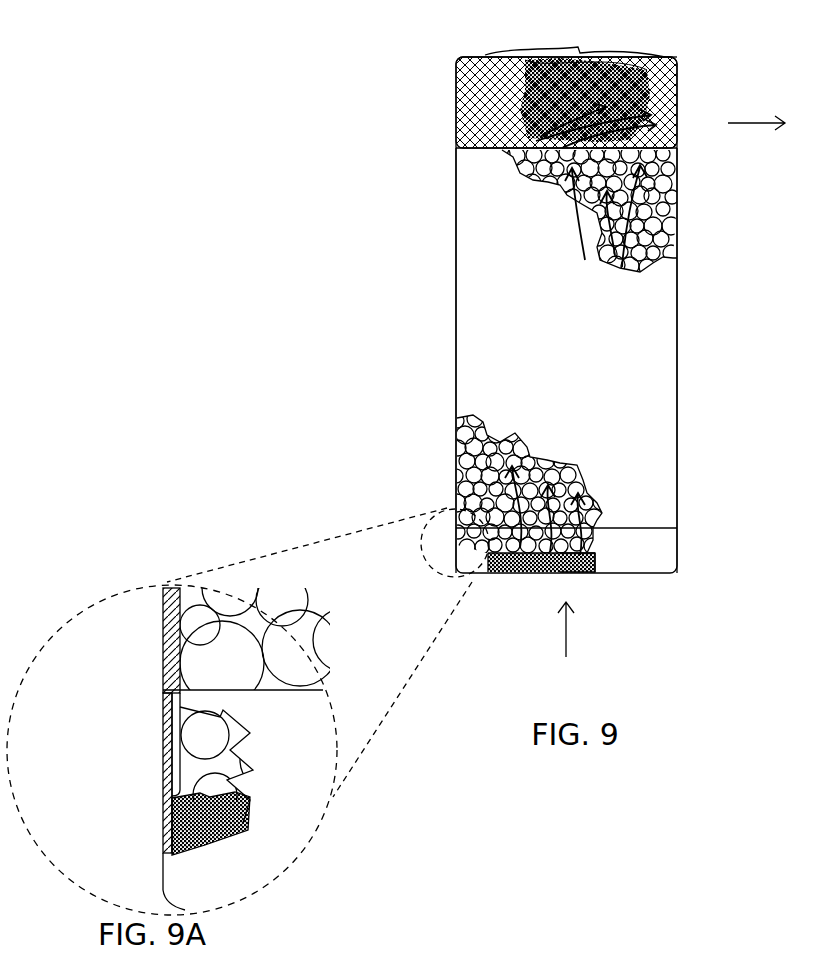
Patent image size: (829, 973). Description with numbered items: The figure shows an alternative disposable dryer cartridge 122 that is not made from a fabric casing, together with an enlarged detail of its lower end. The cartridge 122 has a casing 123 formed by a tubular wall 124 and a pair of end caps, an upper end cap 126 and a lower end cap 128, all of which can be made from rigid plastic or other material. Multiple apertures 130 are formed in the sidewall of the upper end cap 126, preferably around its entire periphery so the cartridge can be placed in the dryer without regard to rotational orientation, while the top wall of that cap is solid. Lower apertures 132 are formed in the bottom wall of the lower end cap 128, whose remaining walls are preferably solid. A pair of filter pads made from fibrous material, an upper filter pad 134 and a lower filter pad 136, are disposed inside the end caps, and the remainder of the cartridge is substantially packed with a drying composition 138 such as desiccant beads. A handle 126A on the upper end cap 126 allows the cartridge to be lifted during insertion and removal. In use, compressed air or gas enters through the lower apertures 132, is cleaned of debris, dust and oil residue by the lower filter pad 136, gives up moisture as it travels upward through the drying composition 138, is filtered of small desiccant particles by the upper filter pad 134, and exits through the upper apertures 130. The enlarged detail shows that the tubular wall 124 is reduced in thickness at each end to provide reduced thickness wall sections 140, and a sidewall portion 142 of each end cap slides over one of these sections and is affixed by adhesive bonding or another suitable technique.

In FIG. 9, the cartridge 122 is at (415, 306).
In FIG. 9, the casing 123 is at (678, 323).
In FIG. 9, the tubular wall 124 is at (456, 437).
In FIG. 9, the upper end cap 126 is at (679, 91).
In FIG. 9, the handle 126A is at (498, 52).
In FIG. 9, the lower end cap 128 is at (678, 548).
In FIG. 9, the upper apertures 130 is at (711, 70).
In FIG. 9, the lower apertures 132 is at (590, 578).
In FIG. 9, the upper filter pad 134 is at (585, 65).
In FIG. 9, the lower filter pad 136 is at (492, 577).
In FIG. 9A, the lower filter pad 136 is at (170, 828).
In FIG. 9, the drying composition 138 is at (678, 200).
In FIG. 9A, the drying composition 138 is at (168, 638).
In FIG. 9A, the reduced thickness wall sections 140 is at (170, 728).
In FIG. 9A, the sidewall portion 142 is at (170, 800).